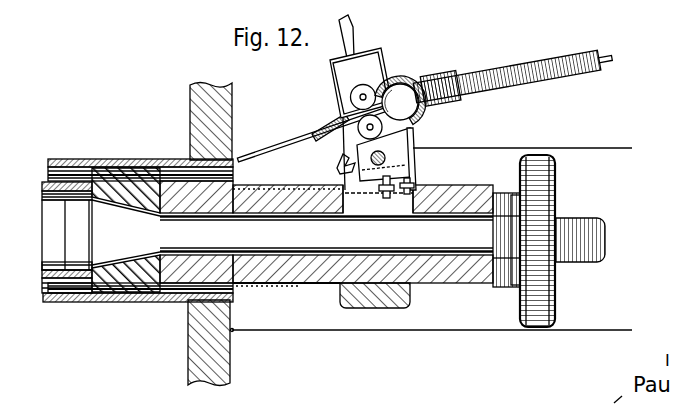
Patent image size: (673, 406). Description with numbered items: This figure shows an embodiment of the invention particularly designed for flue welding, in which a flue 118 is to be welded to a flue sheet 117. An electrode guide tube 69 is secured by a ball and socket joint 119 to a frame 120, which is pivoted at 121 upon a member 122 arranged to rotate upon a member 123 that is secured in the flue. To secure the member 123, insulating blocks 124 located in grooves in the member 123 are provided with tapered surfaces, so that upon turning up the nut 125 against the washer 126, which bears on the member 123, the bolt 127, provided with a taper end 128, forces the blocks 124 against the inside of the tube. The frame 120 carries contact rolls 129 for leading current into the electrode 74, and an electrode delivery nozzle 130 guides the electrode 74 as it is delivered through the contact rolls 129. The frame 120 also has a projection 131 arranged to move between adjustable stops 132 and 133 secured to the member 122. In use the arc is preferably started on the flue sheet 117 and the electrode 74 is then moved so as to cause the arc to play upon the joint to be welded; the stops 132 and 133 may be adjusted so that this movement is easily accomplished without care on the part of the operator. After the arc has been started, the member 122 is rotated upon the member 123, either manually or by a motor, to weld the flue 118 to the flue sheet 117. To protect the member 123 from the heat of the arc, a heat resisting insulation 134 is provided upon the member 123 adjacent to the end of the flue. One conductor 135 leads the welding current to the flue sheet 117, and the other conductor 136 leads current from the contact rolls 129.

The electrode guide tube 69 is at (499, 67).
The electrode 74 is at (264, 150).
The flue sheet 117 is at (197, 118).
The flue 118 is at (135, 303).
The ball and socket joint 119 is at (418, 70).
The frame 120 is at (383, 51).
The pivot 121 is at (418, 143).
The rotating member 122 is at (406, 306).
The member secured in the flue 123 is at (483, 194).
The insulating blocks 124 is at (102, 304).
The nut 125 is at (550, 204).
The washer 126 is at (509, 288).
The bolt 127 is at (598, 237).
The taper end 128 is at (115, 159).
The contact rolls 129 is at (352, 95).
The electrode delivery nozzle 130 is at (332, 133).
The projection 131 is at (406, 181).
The adjustable stop 132 is at (341, 171).
The adjustable stop 133 is at (414, 183).
The heat resisting insulation 134 is at (243, 288).
The conductor 135 is at (432, 333).
The conductor 136 is at (603, 148).